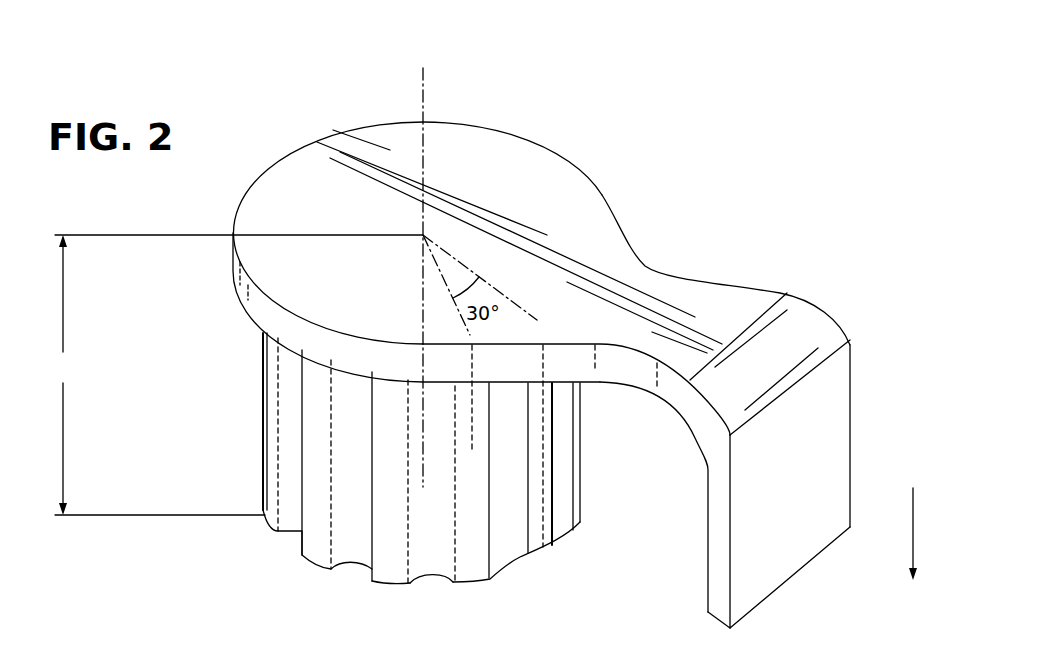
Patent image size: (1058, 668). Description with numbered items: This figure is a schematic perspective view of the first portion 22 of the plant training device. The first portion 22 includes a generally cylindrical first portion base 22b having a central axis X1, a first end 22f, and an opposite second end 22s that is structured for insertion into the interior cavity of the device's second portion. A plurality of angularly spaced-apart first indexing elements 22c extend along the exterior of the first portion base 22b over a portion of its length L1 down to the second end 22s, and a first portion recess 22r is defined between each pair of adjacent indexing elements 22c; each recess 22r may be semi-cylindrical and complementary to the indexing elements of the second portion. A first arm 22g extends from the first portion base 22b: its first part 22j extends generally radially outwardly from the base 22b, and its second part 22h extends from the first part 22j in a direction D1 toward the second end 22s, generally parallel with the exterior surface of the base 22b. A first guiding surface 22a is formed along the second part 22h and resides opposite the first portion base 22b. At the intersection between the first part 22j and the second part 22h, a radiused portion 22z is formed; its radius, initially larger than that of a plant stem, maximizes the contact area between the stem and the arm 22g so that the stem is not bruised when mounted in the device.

The first portion 22 is at (541, 128).
The first end 22f is at (308, 187).
The first part of the first arm 22j is at (640, 305).
The first arm 22g is at (682, 277).
The second part of the first arm 22h is at (821, 425).
The first guiding surface 22a is at (707, 563).
The radiused portion 22z is at (684, 430).
The first portion base 22b is at (265, 418).
The first portion recess 22r is at (347, 482).
The first indexing elements 22c is at (388, 567).
The second end 22s is at (405, 576).
The central axis X1 is at (423, 98).
The length L1 is at (238, 375).
The direction D1 is at (929, 534).